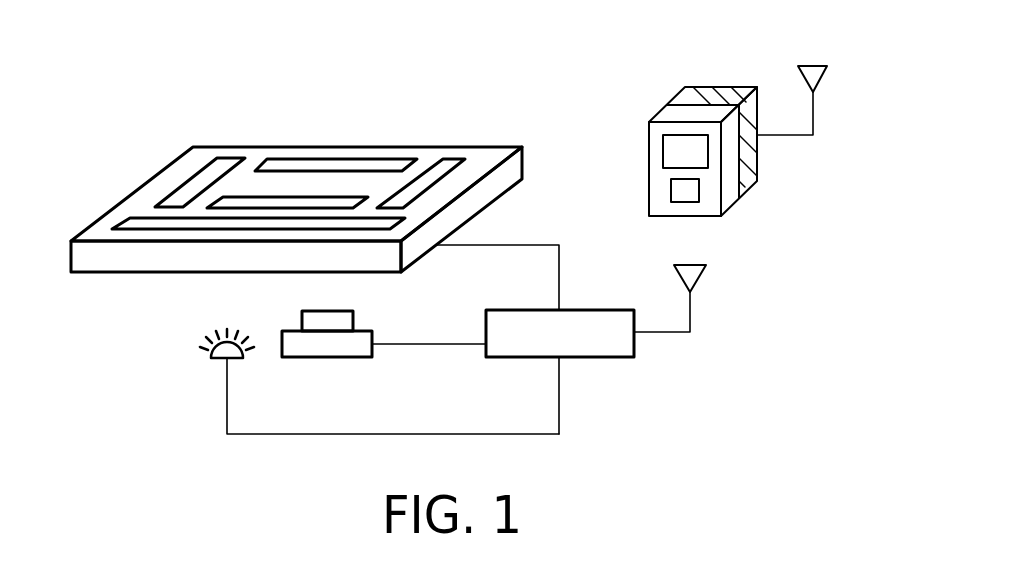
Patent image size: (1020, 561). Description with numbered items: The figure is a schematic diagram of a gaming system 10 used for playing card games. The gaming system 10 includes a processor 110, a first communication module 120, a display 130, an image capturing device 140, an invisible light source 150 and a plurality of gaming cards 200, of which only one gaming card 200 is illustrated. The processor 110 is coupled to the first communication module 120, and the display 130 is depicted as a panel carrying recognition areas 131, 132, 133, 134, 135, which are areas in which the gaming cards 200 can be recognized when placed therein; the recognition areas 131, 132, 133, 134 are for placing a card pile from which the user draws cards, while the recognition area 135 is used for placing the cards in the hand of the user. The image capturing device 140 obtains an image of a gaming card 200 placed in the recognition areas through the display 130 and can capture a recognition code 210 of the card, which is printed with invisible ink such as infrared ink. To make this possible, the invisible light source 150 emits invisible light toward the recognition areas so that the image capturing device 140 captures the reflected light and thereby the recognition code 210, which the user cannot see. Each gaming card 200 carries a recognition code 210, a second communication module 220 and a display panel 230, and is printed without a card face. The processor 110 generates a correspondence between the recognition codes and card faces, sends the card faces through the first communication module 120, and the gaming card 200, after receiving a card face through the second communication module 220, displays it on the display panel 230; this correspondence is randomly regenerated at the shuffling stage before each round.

The gaming system 10 is at (123, 146).
The processor 110 is at (587, 310).
The first communication module 120 is at (706, 275).
The display 130 is at (525, 162).
The recognition area 131 is at (368, 158).
The recognition area 132 is at (232, 158).
The recognition area 133 is at (292, 197).
The recognition area 134 is at (452, 159).
The recognition area 135 is at (200, 231).
The image capturing device 140 is at (360, 358).
The invisible light source 150 is at (217, 360).
The gaming card 200 is at (750, 177).
The recognition code 210 is at (677, 190).
The second communication module 220 is at (827, 75).
The display panel 230 is at (672, 150).